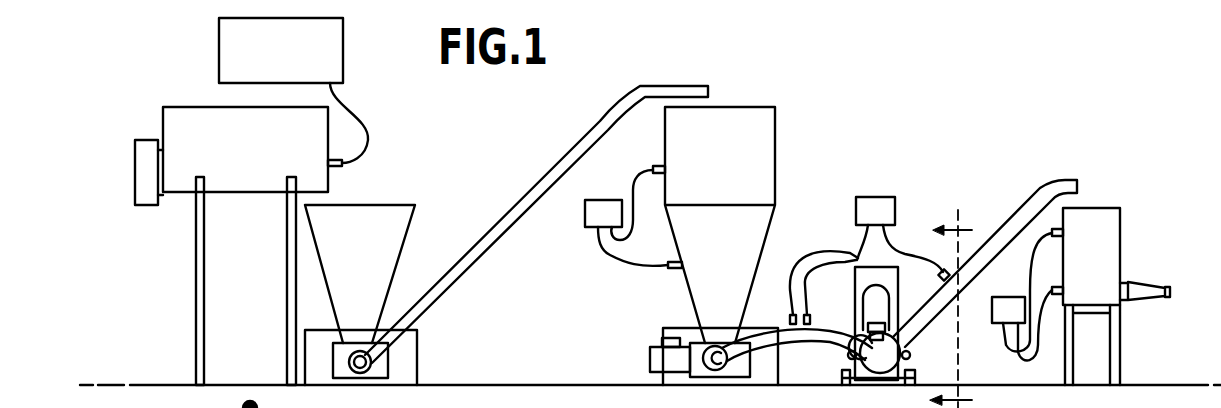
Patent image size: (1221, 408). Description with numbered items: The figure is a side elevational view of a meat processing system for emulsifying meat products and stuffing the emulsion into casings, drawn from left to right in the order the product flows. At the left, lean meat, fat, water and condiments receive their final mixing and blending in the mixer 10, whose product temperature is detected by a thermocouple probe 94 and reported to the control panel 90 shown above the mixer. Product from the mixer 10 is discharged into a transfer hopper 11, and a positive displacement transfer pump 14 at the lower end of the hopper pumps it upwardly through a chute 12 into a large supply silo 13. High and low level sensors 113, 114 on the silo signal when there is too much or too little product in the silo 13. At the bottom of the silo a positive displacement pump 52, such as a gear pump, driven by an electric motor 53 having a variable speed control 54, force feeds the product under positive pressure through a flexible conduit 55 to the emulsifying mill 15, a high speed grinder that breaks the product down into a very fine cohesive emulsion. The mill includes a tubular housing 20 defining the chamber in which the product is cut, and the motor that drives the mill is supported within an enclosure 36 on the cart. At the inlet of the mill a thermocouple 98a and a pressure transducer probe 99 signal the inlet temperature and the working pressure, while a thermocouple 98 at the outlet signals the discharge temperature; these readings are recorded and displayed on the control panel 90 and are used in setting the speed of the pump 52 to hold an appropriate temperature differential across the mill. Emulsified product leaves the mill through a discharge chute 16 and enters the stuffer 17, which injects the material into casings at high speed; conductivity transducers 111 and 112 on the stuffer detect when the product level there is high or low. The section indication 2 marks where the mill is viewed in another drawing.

The control panel 90 is at (228, 52).
The mixer 10 is at (178, 125).
The thermocouple probe 94 is at (343, 164).
The transfer hopper 11 is at (333, 242).
The chute 12 is at (501, 220).
The positive displacement transfer pump 14 is at (388, 360).
The supply silo 13 is at (770, 152).
The high level sensor 113 is at (660, 165).
The low level sensor 114 is at (674, 270).
The positive displacement pump 52 is at (717, 378).
The electric motor 53 is at (652, 357).
The variable speed control 54 is at (662, 341).
The flexible conduit 55 is at (790, 345).
The pressure transducer probe 99 is at (790, 318).
The inlet thermocouple 98a is at (832, 297).
The emulsifying mill 15 is at (860, 263).
The outlet thermocouple 98 is at (942, 268).
The enclosure 36 is at (892, 292).
The tubular housing 20 is at (895, 340).
The discharge chute 16 is at (1023, 205).
The stuffer 17 is at (1110, 248).
The conductivity transducer 111 is at (1064, 235).
The conductivity transducer 112 is at (1058, 288).
The section line 2 is at (951, 307).